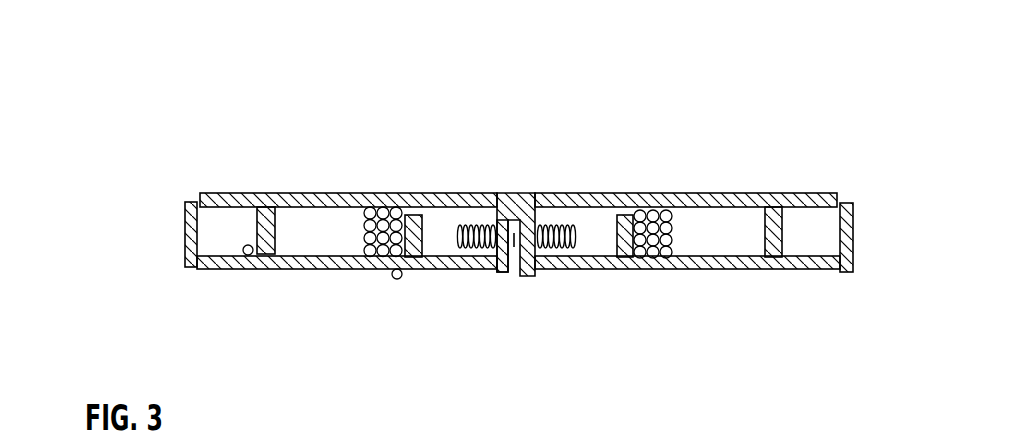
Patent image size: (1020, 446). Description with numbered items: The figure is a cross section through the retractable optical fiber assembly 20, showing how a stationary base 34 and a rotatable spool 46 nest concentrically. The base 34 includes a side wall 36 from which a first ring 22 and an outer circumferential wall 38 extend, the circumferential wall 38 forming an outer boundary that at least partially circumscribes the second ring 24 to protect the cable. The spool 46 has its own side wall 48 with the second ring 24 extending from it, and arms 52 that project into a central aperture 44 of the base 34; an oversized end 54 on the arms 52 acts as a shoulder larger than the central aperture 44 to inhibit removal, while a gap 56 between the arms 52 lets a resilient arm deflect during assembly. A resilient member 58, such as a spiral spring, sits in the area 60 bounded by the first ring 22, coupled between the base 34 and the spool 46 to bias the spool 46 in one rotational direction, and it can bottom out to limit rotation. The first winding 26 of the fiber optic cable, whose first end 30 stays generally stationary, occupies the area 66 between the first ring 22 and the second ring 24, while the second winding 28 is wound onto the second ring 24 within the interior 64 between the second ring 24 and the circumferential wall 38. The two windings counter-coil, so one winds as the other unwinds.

The retractable optical fiber assembly 20 is at (163, 142).
The first ring 22 is at (417, 236).
The second ring 24 is at (270, 237).
The first winding 26 is at (366, 239).
The second winding 28 is at (243, 252).
The first end 30 is at (397, 279).
The base 34 is at (748, 281).
The side wall 36 is at (676, 266).
The circumferential wall 38 is at (853, 240).
The central aperture 44 is at (549, 274).
The spool 46 is at (663, 178).
The side wall 48 is at (590, 200).
The arms 52 is at (493, 258).
The oversized end 54 is at (500, 268).
The gap 56 is at (514, 277).
The resilient member 58 is at (467, 228).
The area 60 is at (598, 240).
The interior 64 is at (215, 235).
The area 66 is at (713, 232).